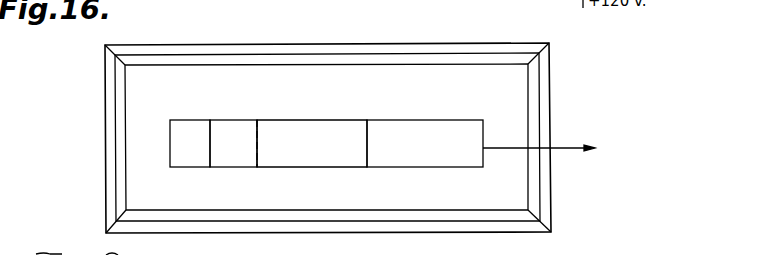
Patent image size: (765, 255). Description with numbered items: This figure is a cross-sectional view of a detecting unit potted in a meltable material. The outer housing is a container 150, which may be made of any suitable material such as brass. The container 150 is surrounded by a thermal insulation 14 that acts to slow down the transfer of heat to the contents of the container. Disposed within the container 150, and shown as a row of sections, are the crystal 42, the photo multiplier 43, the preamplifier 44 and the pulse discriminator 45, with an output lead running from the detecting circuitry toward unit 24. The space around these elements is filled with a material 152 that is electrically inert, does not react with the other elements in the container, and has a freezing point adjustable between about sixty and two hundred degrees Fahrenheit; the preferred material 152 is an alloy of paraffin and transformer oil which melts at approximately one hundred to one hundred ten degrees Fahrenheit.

The container 150 is at (533, 92).
The thermal insulation 14 is at (545, 137).
The meltable material 152 is at (326, 137).
The crystal 42 is at (178, 167).
The photo multiplier 43 is at (232, 167).
The preamplifier 44 is at (285, 167).
The pulse discriminator 45 is at (406, 167).
The unit 24 is at (574, 148).